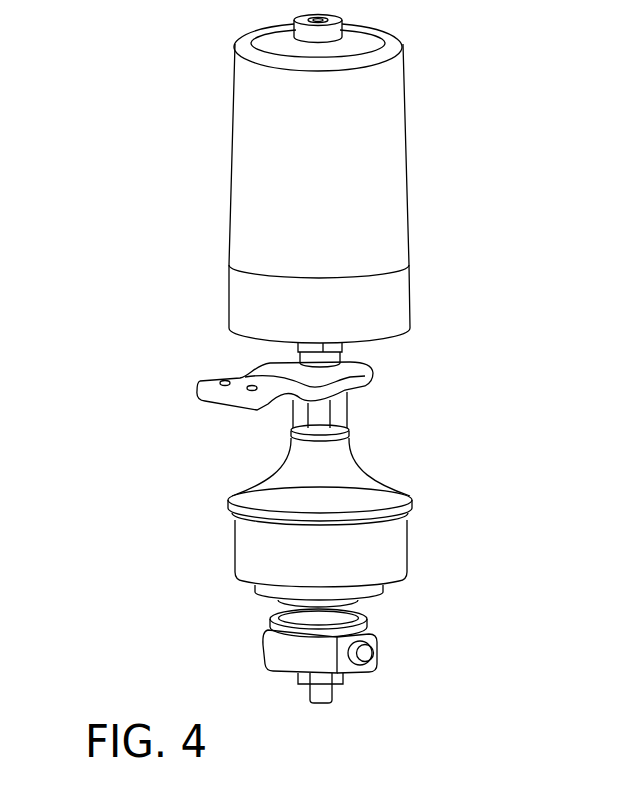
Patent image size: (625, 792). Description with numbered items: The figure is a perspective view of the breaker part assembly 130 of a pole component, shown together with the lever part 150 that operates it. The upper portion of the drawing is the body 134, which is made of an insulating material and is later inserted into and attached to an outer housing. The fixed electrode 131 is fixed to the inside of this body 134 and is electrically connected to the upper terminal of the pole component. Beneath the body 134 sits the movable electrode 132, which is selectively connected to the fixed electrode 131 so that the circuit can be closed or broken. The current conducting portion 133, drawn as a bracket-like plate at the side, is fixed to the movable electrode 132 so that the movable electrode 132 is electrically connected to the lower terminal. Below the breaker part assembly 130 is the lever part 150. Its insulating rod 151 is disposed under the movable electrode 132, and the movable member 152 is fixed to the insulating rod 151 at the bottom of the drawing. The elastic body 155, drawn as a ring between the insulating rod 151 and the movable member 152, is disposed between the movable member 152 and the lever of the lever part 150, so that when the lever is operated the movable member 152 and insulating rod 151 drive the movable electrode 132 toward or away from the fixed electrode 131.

The breaker part assembly 130 is at (90, 160).
The fixed electrode 131 is at (300, 32).
The body 134 is at (243, 203).
The movable electrode 132 is at (308, 358).
The current conducting portion 133 is at (203, 388).
The lever part 150 is at (503, 572).
The insulating rod 151 is at (397, 557).
The elastic body 155 is at (352, 615).
The movable member 152 is at (323, 694).